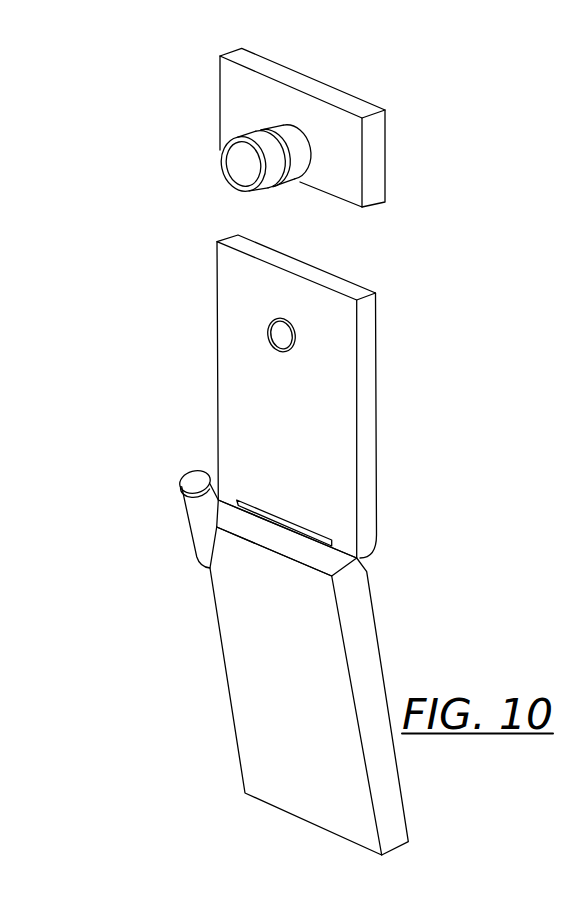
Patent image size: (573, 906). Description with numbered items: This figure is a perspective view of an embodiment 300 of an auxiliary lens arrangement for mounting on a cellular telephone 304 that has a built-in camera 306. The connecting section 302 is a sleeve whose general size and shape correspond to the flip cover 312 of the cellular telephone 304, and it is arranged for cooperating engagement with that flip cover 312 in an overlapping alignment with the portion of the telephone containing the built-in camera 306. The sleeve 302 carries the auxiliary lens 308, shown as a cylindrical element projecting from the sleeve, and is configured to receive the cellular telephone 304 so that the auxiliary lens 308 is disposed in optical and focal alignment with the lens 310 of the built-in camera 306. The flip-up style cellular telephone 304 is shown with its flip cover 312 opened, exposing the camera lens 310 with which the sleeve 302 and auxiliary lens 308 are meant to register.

The embodiment 300 is at (407, 99).
The connecting section 302 is at (378, 192).
The cellular telephone 304 is at (373, 645).
The built-in camera 306 is at (292, 343).
The auxiliary lens 308 is at (223, 173).
The lens 310 is at (271, 332).
The flip cover 312 is at (373, 457).